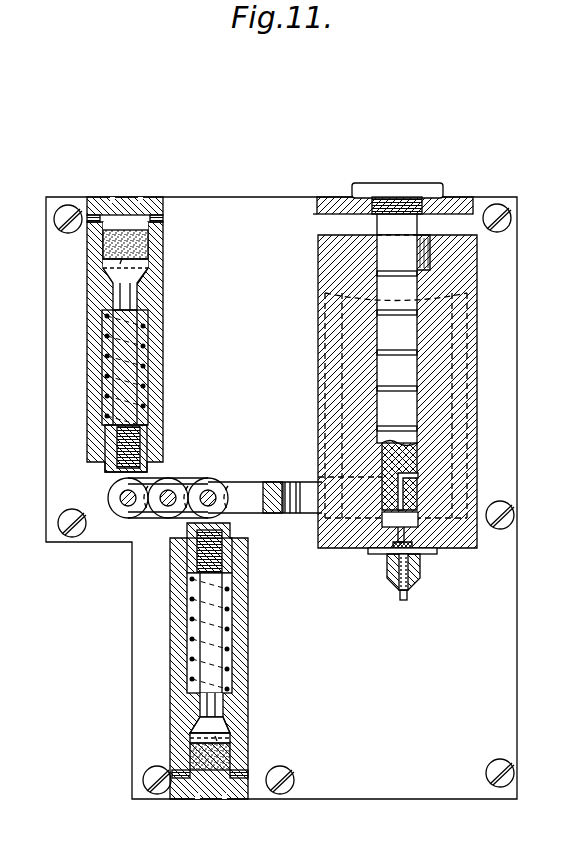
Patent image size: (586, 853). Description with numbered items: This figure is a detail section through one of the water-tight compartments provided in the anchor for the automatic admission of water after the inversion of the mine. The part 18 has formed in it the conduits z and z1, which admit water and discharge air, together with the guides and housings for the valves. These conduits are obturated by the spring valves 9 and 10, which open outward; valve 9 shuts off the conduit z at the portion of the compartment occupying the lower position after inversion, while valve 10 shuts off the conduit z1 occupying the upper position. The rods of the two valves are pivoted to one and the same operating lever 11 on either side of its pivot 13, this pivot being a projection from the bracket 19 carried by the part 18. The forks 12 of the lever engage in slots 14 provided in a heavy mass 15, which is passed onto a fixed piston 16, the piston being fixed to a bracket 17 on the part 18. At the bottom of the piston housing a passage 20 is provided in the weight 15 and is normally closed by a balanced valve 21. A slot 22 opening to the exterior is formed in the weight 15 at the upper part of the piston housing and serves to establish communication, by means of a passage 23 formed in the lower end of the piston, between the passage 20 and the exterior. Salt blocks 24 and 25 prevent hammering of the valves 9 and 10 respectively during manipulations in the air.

The spring valve 9 is at (218, 725).
The spring valve 10 is at (135, 275).
The operating lever 11 is at (248, 488).
The forks of the operating lever 12 is at (305, 487).
The pivot 13 is at (170, 494).
The slots 14 is at (343, 372).
The heavy mass 15 is at (465, 267).
The fixed piston 16 is at (405, 227).
The bracket 17 is at (340, 197).
The part 18 is at (508, 612).
The bracket 19 is at (160, 523).
The passage 20 is at (423, 542).
The balanced valve 21 is at (390, 570).
The slot 22 is at (423, 238).
The passage 23 is at (385, 515).
The salt block 24 is at (230, 760).
The salt block 25 is at (137, 242).
The conduit z is at (217, 740).
The conduit z1 is at (118, 261).